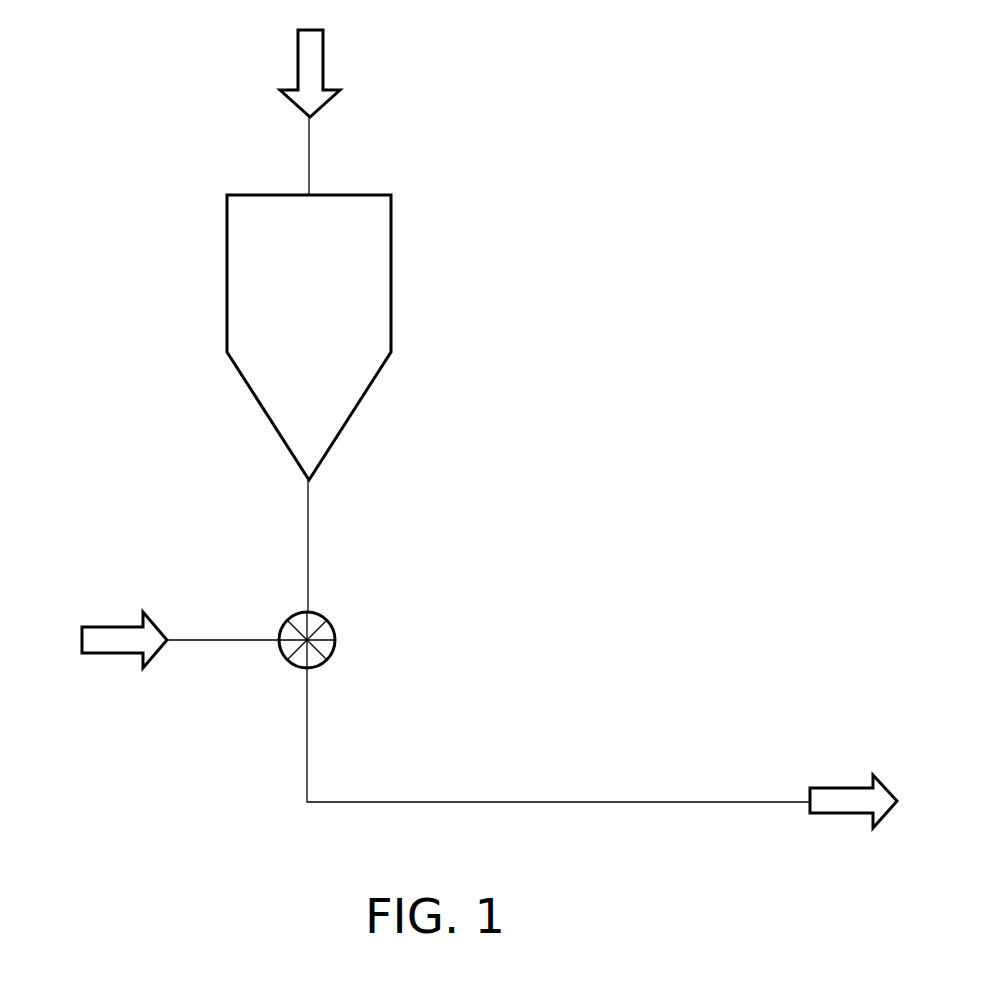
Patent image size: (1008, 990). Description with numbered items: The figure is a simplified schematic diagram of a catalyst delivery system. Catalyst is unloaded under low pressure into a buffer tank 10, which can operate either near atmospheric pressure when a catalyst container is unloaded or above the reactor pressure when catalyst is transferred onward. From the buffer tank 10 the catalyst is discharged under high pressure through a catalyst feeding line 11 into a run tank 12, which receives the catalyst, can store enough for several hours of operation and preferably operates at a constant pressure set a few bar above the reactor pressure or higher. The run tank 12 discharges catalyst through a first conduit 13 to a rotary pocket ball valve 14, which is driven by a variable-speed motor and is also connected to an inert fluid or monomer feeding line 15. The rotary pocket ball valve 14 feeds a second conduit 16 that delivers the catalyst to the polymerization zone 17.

The buffer tank 10 is at (310, 57).
The catalyst feeding line 11 is at (309, 155).
The run tank 12 is at (372, 253).
The first conduit 13 is at (308, 555).
The rotary pocket ball valve 14 is at (323, 640).
The inert fluid or monomer feeding line 15 is at (112, 625).
The second conduit 16 is at (308, 733).
The polymerization zone 17 is at (842, 800).